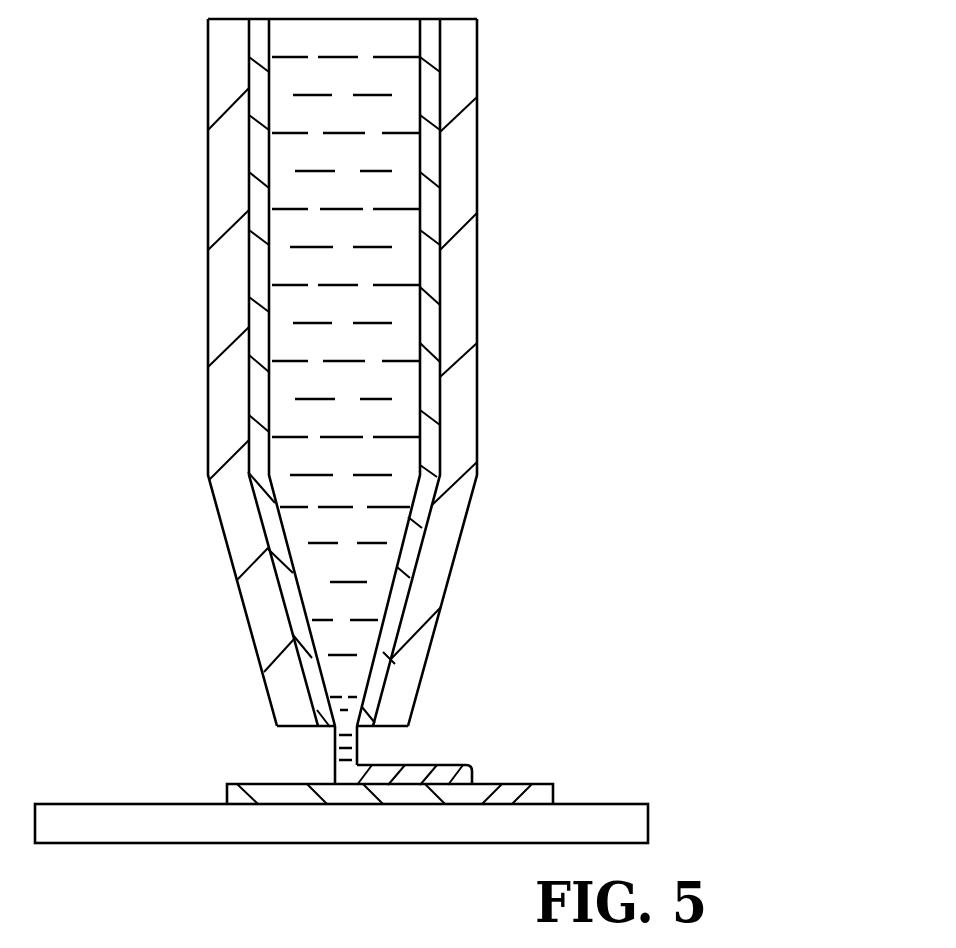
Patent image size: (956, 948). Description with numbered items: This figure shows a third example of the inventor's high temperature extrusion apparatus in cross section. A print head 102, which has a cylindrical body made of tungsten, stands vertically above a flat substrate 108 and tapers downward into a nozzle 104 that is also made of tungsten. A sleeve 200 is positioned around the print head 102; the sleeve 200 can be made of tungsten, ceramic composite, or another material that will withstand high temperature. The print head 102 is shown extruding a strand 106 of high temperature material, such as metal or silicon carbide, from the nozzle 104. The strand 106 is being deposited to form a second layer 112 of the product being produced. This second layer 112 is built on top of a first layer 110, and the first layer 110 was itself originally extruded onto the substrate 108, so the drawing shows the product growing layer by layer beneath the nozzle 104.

The print head 102 is at (367, 389).
The sleeve 200 is at (207, 310).
The nozzle 104 is at (409, 592).
The strand 106 is at (333, 748).
The substrate 108 is at (617, 805).
The first layer 110 is at (252, 784).
The second layer 112 is at (445, 765).